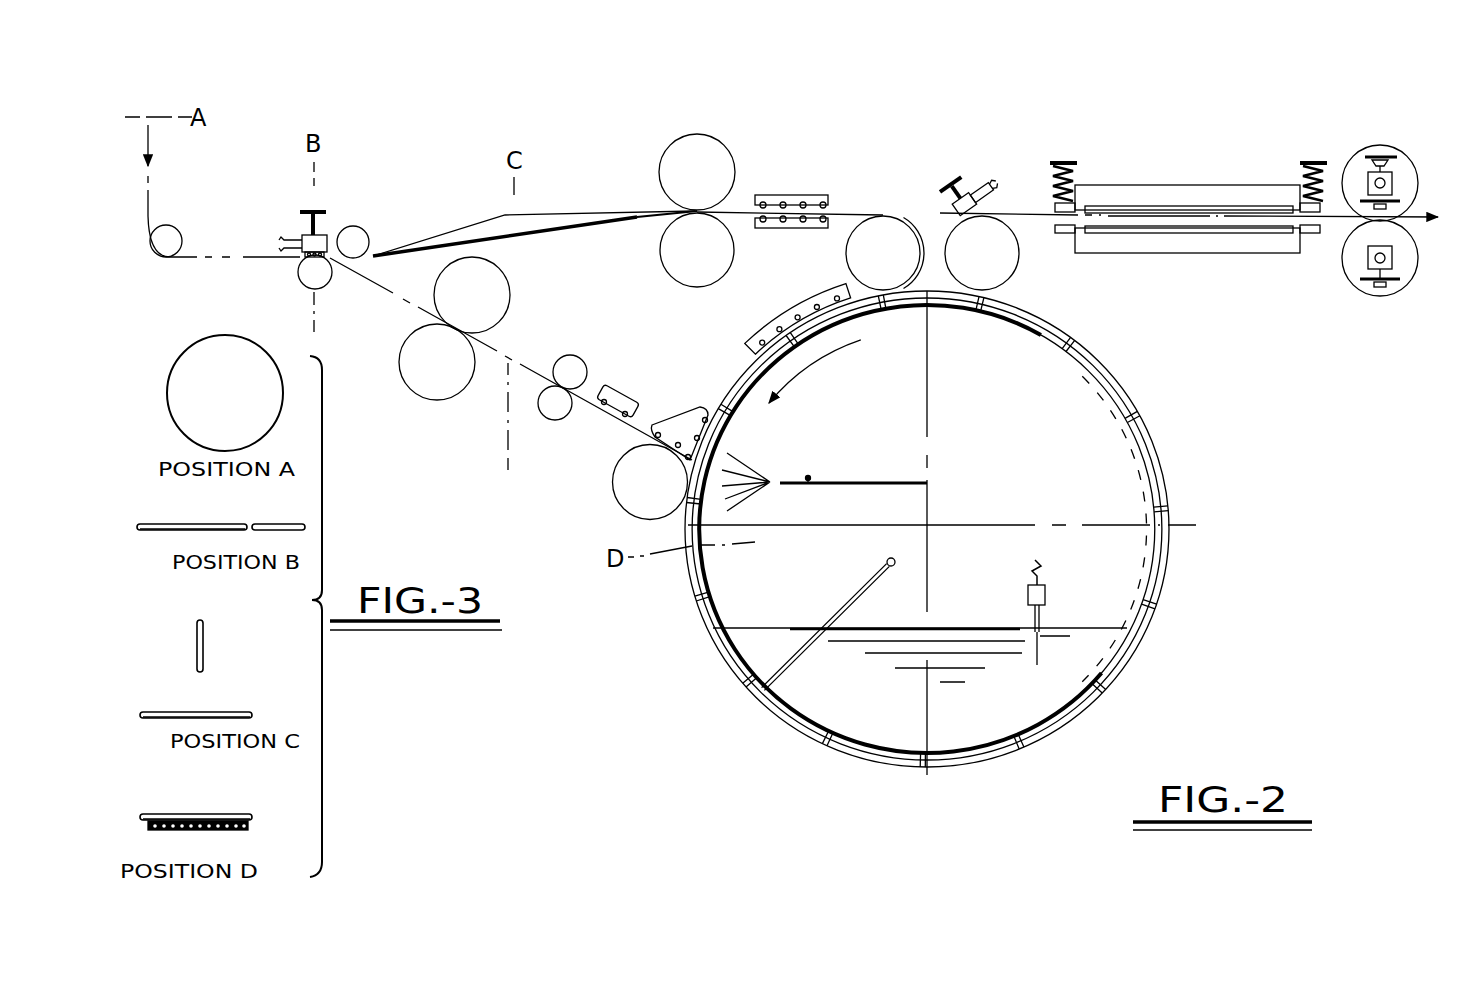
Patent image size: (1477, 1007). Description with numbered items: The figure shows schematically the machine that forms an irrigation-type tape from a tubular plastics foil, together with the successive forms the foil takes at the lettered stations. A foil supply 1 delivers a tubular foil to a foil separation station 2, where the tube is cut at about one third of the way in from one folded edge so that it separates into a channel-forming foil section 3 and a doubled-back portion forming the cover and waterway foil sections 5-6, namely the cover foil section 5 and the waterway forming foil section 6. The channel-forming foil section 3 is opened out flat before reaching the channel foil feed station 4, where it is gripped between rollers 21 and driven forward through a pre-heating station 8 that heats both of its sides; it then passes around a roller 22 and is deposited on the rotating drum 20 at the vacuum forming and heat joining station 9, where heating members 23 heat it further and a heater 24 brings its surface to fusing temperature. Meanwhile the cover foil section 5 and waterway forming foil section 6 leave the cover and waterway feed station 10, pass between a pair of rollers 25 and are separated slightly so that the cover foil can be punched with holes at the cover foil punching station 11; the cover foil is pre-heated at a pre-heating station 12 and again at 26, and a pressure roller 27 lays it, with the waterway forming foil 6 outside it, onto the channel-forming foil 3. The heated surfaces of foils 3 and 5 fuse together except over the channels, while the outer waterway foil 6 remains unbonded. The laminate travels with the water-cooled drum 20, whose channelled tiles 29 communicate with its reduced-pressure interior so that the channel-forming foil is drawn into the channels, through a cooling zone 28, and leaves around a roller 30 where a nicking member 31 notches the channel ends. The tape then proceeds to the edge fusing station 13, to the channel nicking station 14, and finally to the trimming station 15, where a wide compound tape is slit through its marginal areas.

In FIG. 2, the foil supply 1 is at (212, 169).
In FIG. 2, the foil separation station 2 is at (339, 221).
In FIG. 2, the channel-forming foil section 3 is at (557, 235).
In FIG. 3, the channel-forming foil section 3 is at (282, 521).
In FIG. 2, the channel foil feed station 4 is at (743, 168).
In FIG. 3, the cover foil section 5 is at (172, 522).
In FIG. 3, the waterway forming foil section 6 is at (172, 534).
In FIG. 2, the cover and waterway foil sections 5-6 is at (506, 356).
In FIG. 2, the pre-heating station 8 is at (804, 191).
In FIG. 2, the vacuum forming and heat joining station 9 is at (811, 413).
In FIG. 2, the cover and waterway feed station 10 is at (400, 389).
In FIG. 2, the cover foil punching station 11 is at (585, 363).
In FIG. 2, the pre-heating station 12 is at (591, 434).
In FIG. 2, the edge fusing station 13 is at (1161, 182).
In FIG. 2, the channel nicking station 14 is at (936, 177).
In FIG. 2, the trimming station 15 is at (1422, 200).
In FIG. 2, the rotating drum 20 is at (1139, 405).
In FIG. 2, the rollers 21 is at (657, 166).
In FIG. 2, the roller 22 is at (845, 255).
In FIG. 2, the heating members 23 is at (760, 330).
In FIG. 2, the heater 24 is at (692, 410).
In FIG. 2, the pair of rollers 25 is at (511, 289).
In FIG. 2, the pre-heater 26 is at (643, 384).
In FIG. 2, the pressure roller 27 is at (612, 499).
In FIG. 2, the cooling zone 28 is at (772, 476).
In FIG. 2, the tiles 29 is at (1160, 492).
In FIG. 2, the roller 30 is at (1020, 281).
In FIG. 2, the nicking member 31 is at (988, 180).